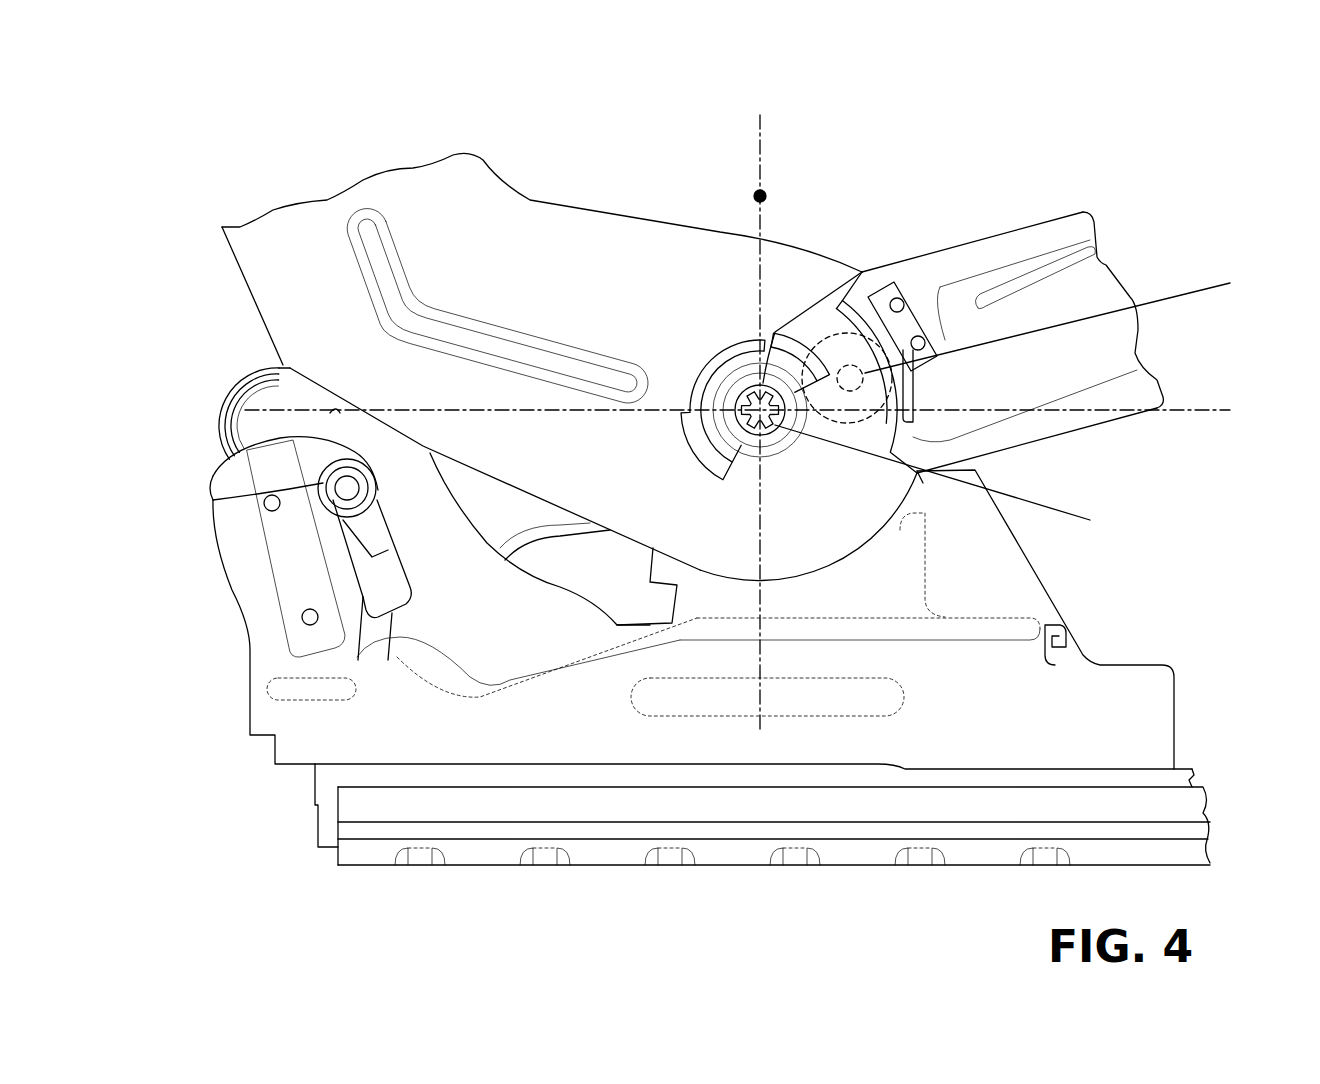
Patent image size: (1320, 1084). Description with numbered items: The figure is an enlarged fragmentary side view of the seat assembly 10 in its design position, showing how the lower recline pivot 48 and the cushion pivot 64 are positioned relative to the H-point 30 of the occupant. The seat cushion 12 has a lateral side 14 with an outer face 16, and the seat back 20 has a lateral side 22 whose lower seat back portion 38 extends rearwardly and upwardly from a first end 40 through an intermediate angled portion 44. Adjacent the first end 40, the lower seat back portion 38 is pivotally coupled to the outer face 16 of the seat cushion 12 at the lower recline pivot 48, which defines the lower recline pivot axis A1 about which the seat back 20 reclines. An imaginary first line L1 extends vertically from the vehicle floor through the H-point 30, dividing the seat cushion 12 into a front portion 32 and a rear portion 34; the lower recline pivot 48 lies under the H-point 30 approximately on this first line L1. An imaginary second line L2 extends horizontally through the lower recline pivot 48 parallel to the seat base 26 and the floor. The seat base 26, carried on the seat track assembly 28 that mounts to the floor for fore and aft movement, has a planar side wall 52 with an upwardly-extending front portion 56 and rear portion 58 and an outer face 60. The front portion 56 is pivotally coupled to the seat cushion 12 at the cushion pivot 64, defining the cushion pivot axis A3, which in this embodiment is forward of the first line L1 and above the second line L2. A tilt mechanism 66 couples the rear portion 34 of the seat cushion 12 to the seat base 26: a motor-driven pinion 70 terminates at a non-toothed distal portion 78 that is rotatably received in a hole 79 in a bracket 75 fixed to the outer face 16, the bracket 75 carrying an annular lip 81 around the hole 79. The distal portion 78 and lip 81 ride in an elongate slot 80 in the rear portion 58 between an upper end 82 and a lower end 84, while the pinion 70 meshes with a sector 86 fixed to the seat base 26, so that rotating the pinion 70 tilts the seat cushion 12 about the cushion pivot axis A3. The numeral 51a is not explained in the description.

The seat assembly 10 is at (1019, 279).
The seat cushion 12 is at (1019, 288).
The lateral sides 14 is at (1040, 220).
The outer face 16 is at (1068, 379).
The seat back 20 is at (542, 306).
The lateral sides 22 is at (542, 325).
The seat base 26 is at (672, 802).
The seat track assembly 28 is at (758, 872).
The H-point 30 is at (762, 193).
The front portion 32 is at (1125, 258).
The rear portion 34 is at (553, 540).
The lower seat back portion 38 is at (602, 243).
The first end 40 is at (877, 538).
The angled portion 44 is at (278, 364).
The lower recline pivot 48 is at (850, 262).
The brace 51a is at (819, 233).
The side walls 52 is at (1102, 641).
The front portion 56 is at (1099, 648).
The rear portion 58 is at (658, 626).
The outer face 60 is at (935, 682).
The cushion pivot 64 is at (885, 333).
The tilt mechanism 66 is at (332, 558).
The pinion 70 is at (249, 447).
The bracket 75 is at (397, 726).
The distal portion 78 is at (264, 503).
The hole 79 is at (285, 539).
The elongate slot 80 is at (279, 631).
The annular lip 81 is at (330, 413).
The upper end 82 is at (258, 439).
The lower end 84 is at (390, 615).
The sector 86 is at (282, 636).
The first line L1 is at (760, 409).
The second line L2 is at (749, 413).
The lower recline pivot axis A1 is at (950, 482).
The cushion pivot axis A3 is at (1061, 323).